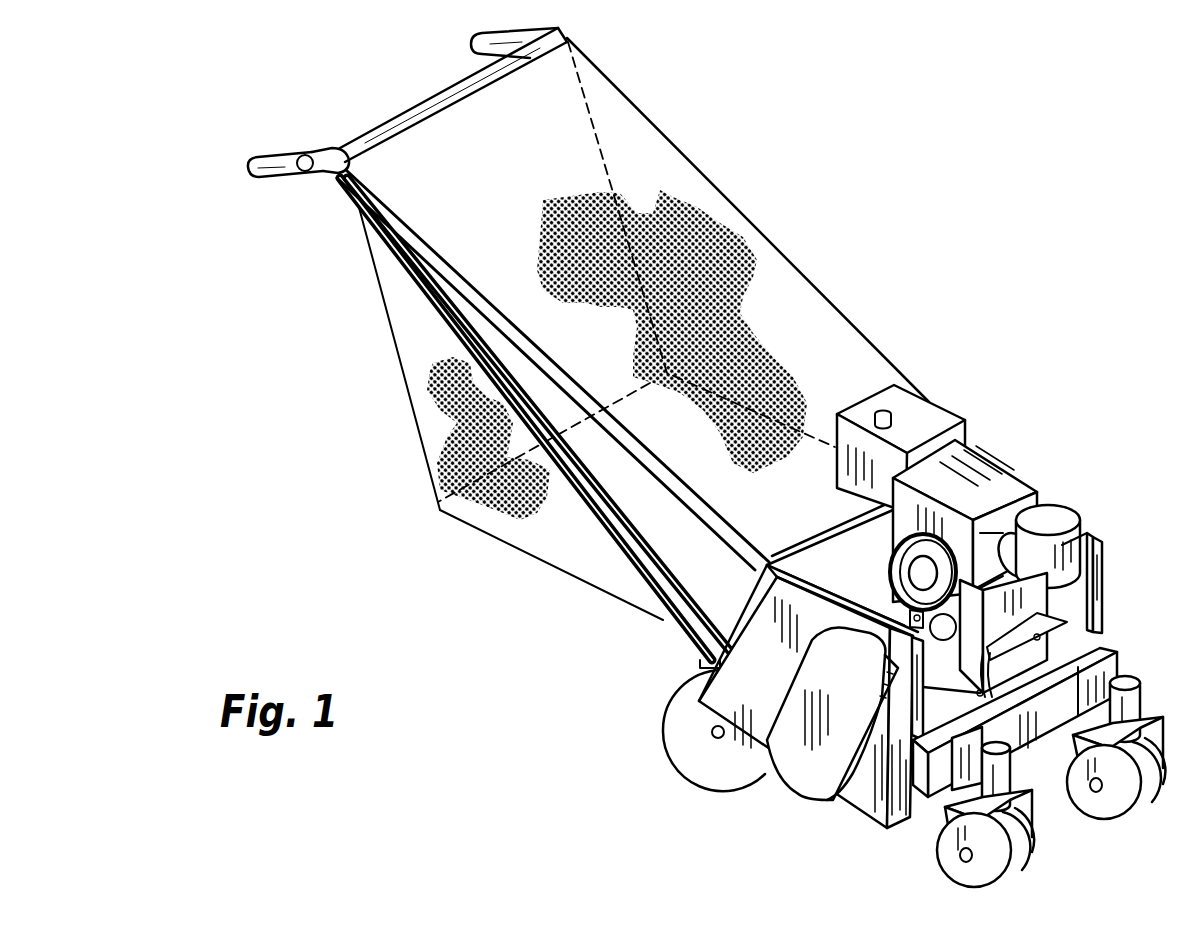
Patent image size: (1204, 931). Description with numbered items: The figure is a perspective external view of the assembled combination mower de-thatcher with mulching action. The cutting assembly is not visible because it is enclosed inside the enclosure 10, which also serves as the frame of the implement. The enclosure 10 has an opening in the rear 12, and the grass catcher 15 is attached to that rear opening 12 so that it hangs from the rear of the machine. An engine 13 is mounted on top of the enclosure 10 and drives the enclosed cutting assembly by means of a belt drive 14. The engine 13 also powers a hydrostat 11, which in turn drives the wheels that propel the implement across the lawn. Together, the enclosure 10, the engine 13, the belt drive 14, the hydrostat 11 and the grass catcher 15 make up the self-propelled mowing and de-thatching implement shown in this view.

The enclosure 10 is at (856, 794).
The hydrostat 11 is at (1073, 580).
The opening in the rear 12 is at (740, 612).
The engine 13 is at (995, 462).
The belt drive 14 is at (790, 730).
The grass catcher 15 is at (437, 395).